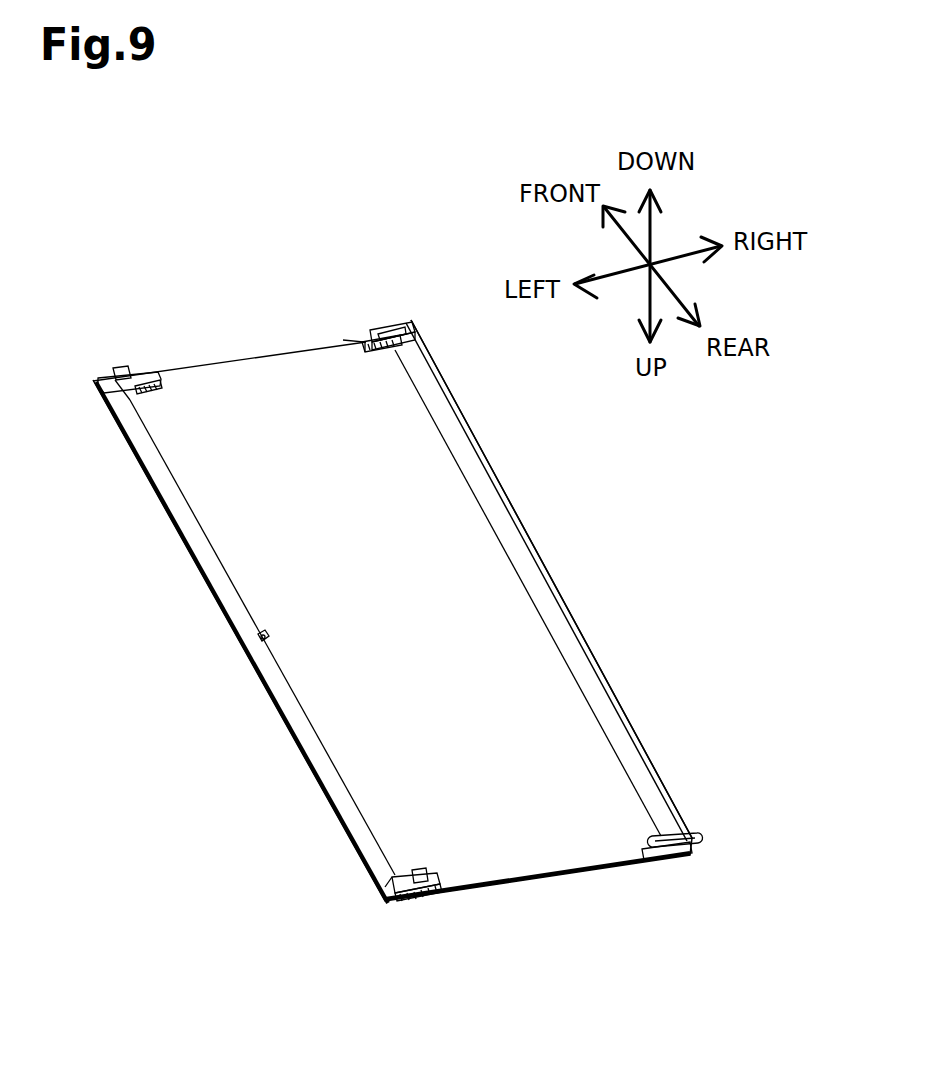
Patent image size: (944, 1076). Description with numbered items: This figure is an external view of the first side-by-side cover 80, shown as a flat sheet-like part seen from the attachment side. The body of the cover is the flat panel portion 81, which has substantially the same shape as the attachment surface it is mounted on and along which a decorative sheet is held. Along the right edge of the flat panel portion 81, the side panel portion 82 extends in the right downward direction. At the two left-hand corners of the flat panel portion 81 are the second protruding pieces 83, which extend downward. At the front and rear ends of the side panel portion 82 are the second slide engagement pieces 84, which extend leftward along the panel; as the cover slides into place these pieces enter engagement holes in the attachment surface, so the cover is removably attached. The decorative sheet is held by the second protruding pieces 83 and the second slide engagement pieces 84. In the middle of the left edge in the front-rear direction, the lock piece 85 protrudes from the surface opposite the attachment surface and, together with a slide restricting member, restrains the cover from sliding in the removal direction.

The first side-by-side cover 80 is at (248, 320).
The flat panel portion 81 is at (410, 624).
The side panel portion 82 is at (528, 582).
The second protruding pieces 83 is at (118, 366).
The second slide engagement pieces 84 is at (393, 323).
The lock piece 85 is at (262, 634).